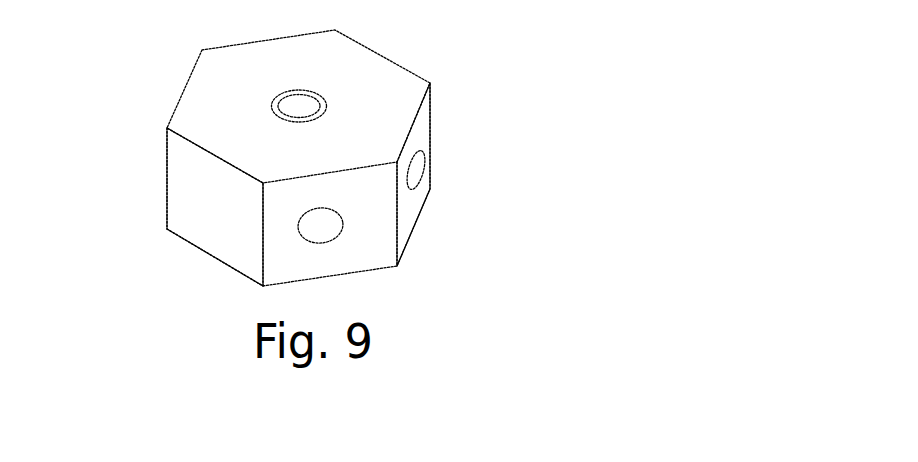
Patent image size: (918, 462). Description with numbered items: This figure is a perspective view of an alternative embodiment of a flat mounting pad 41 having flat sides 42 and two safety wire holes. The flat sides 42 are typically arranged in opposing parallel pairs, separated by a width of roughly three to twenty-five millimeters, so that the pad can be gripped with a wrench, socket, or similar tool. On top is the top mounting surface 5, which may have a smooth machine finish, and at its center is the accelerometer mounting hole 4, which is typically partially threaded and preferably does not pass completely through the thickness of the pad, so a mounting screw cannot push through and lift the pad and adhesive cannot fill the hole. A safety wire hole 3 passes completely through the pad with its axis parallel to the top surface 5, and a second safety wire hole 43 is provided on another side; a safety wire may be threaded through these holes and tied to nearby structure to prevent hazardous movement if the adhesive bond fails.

The safety wire hole 3 is at (343, 225).
The accelerometer mounting hole 4 is at (322, 108).
The top mounting surface 5 is at (223, 80).
The flat mounting pad 41 is at (230, 265).
The flat sides 42 is at (423, 130).
The second safety wire hole 43 is at (418, 182).